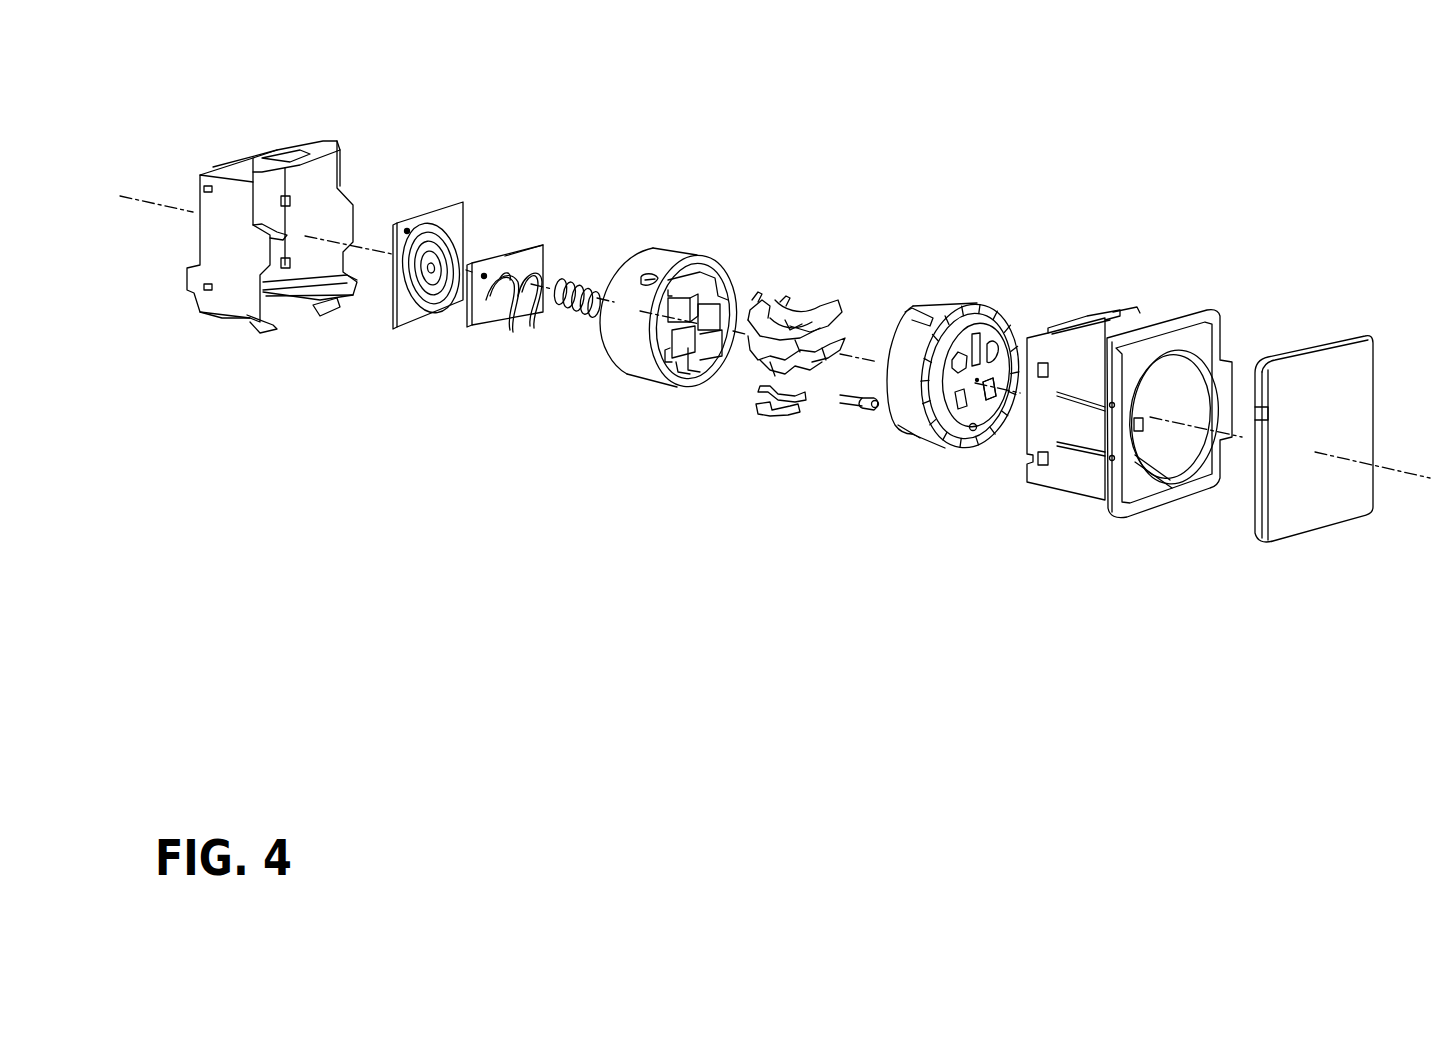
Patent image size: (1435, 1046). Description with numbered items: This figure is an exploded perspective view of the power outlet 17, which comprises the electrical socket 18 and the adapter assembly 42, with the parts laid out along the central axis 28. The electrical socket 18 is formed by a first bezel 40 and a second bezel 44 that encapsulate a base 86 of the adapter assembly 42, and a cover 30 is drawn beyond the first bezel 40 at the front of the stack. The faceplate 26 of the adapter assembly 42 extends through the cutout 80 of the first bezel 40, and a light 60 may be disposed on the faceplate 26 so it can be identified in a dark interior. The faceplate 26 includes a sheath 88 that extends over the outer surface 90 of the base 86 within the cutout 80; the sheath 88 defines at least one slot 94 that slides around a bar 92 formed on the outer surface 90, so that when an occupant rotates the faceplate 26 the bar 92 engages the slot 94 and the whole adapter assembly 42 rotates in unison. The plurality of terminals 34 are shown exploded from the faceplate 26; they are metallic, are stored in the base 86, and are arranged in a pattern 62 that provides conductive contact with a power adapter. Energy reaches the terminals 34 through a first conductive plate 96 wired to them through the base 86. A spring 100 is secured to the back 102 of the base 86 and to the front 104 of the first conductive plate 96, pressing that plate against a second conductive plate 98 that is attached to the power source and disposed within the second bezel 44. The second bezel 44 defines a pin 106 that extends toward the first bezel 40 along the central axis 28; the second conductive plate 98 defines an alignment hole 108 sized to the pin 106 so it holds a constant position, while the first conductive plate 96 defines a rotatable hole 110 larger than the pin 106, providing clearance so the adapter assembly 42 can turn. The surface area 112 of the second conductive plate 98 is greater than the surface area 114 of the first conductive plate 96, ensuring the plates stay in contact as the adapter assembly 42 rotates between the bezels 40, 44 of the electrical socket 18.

The power outlet 17 is at (187, 64).
The electrical socket 18 is at (1126, 633).
The adapter assembly 42 is at (958, 511).
The central axis 28 is at (1410, 473).
The second bezel 44 is at (340, 167).
The pin 106 is at (277, 232).
The second conductive plate 98 is at (457, 217).
The alignment hole 108 is at (429, 265).
The surface area 112 is at (412, 222).
The front 104 is at (500, 266).
The first conductive plate 96 is at (538, 242).
The surface area 114 is at (474, 320).
The rotatable hole 110 is at (536, 330).
The spring 100 is at (578, 280).
The outer surface 90 is at (637, 366).
The back 102 is at (606, 342).
The base 86 is at (657, 262).
The bar 92 is at (662, 283).
The terminals 34 is at (816, 298).
The light 60 is at (872, 410).
The sheath 88 is at (893, 347).
The slot 94 is at (908, 318).
The faceplate 26 is at (985, 337).
The pattern 62 is at (978, 404).
The first bezel 40 is at (1207, 330).
The cutout 80 is at (1197, 467).
The cover 30 is at (1303, 500).